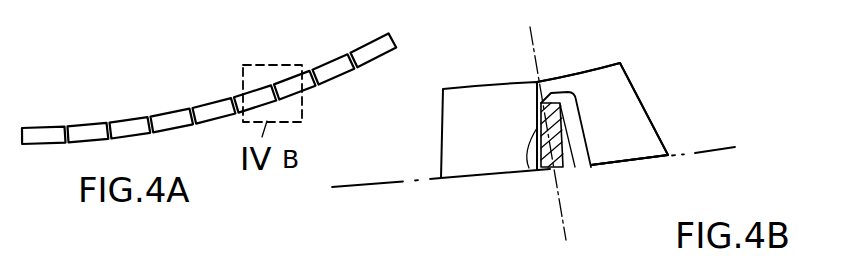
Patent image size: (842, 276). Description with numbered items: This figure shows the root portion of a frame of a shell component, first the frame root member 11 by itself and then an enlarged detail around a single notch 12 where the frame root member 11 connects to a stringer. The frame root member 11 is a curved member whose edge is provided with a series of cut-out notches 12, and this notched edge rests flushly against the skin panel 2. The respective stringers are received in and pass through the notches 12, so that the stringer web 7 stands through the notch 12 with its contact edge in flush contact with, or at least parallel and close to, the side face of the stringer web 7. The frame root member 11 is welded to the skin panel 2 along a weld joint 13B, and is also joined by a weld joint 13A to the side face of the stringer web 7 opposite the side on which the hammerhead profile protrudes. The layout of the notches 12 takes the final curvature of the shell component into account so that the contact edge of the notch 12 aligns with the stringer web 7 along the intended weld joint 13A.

In FIG. 4A, the frame root member 11 is at (204, 106).
In FIG. 4B, the frame root member 11 is at (623, 123).
In FIG. 4B, the notch 12 is at (591, 167).
In FIG. 4B, the weld joint 13A is at (529, 168).
In FIG. 4B, the weld joint 13B is at (628, 163).
In FIG. 4B, the skin panel 2 is at (718, 148).
In FIG. 4B, the stringer web 7 is at (575, 167).